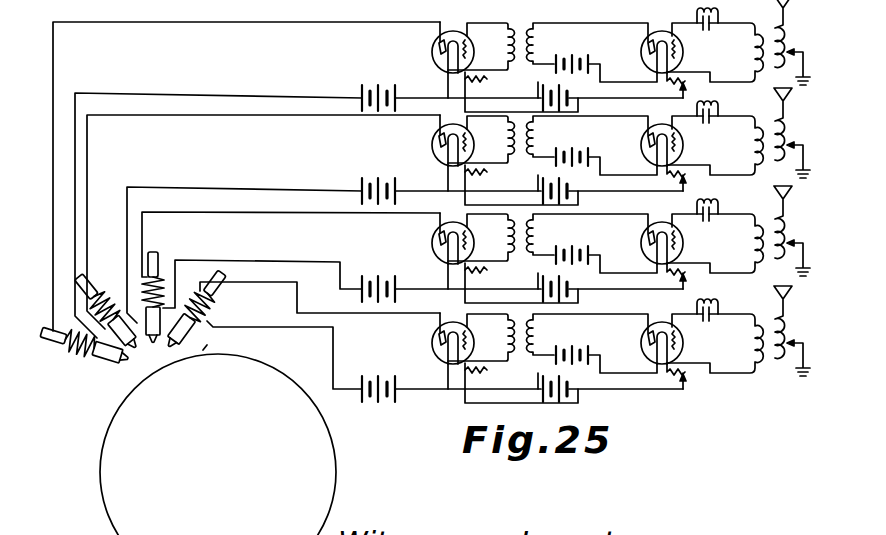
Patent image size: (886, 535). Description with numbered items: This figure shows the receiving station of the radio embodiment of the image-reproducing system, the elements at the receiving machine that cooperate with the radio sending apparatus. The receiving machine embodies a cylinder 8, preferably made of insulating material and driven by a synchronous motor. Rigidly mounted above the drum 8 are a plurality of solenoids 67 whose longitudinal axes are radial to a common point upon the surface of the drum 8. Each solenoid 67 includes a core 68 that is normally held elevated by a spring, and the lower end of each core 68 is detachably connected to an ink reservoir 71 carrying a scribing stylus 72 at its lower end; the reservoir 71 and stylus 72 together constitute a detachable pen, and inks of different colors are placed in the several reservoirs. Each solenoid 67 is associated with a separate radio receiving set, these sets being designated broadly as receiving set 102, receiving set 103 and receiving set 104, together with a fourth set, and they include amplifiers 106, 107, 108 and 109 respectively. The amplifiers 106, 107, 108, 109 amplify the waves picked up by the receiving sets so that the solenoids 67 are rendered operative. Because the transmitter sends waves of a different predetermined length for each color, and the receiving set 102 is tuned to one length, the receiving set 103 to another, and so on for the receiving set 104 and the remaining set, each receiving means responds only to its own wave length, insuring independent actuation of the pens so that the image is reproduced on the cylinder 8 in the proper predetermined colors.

The cylinder 8 is at (334, 496).
The solenoid 67 is at (206, 346).
The core 68 is at (92, 280).
The ink reservoir 71 is at (97, 367).
The scribing stylus 72 is at (163, 360).
The receiving set 102 is at (646, 52).
The receiving set 103 is at (646, 145).
The receiving set 104 is at (646, 243).
The amplifier 106 is at (542, 197).
The amplifier 107 is at (438, 145).
The amplifier 108 is at (438, 243).
The amplifier 109 is at (438, 343).